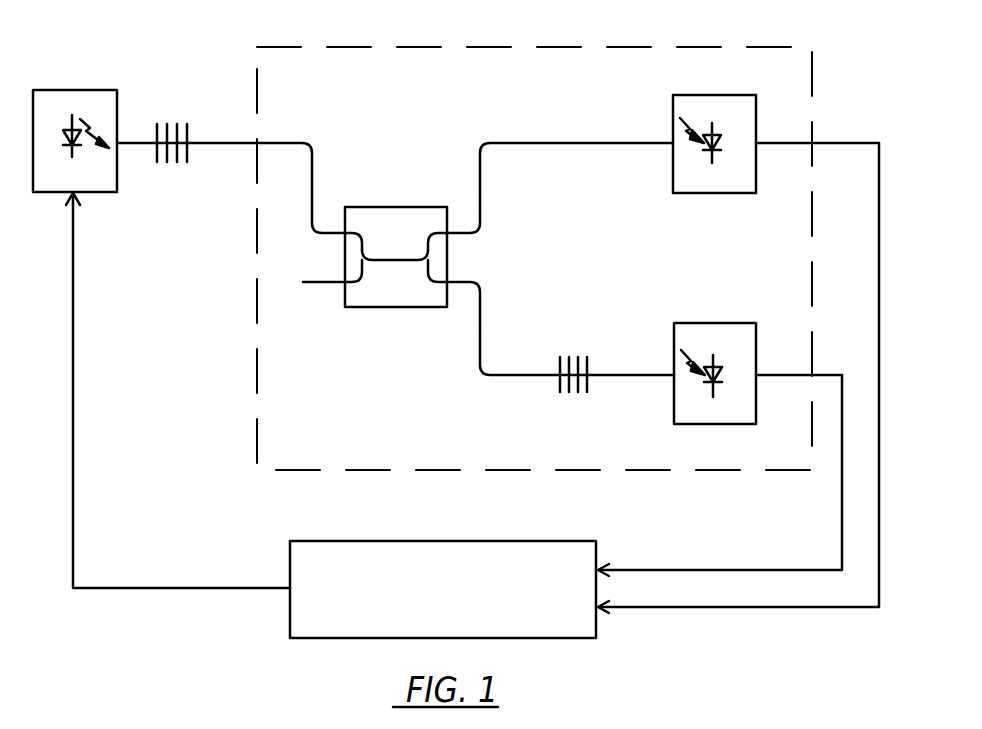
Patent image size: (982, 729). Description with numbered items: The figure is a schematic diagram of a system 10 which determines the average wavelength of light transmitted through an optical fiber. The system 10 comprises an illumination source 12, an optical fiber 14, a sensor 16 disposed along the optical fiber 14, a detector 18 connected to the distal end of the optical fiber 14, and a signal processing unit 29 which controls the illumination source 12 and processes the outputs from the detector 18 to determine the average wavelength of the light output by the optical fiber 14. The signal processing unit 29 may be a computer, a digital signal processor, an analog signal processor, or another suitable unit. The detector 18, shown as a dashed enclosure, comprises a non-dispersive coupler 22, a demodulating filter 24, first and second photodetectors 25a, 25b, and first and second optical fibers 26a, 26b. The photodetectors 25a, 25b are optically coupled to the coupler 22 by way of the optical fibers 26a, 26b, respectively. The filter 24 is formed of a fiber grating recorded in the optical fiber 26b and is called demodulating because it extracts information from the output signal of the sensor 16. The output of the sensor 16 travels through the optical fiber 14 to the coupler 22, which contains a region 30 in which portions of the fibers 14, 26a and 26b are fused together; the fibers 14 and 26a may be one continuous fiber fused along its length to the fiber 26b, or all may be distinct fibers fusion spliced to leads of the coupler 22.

The system 10 is at (222, 33).
The illumination source 12 is at (112, 66).
The optical fiber 14 is at (225, 146).
The sensor 16 is at (170, 122).
The detector 18 is at (492, 22).
The non-dispersive coupler 22 is at (372, 207).
The demodulating filter 24 is at (576, 338).
The first photodetector 25a is at (720, 95).
The second photodetector 25b is at (730, 323).
The first optical fiber 26a is at (608, 116).
The second optical fiber 26b is at (652, 343).
The signal processing unit 29 is at (480, 506).
The region 30 is at (388, 259).